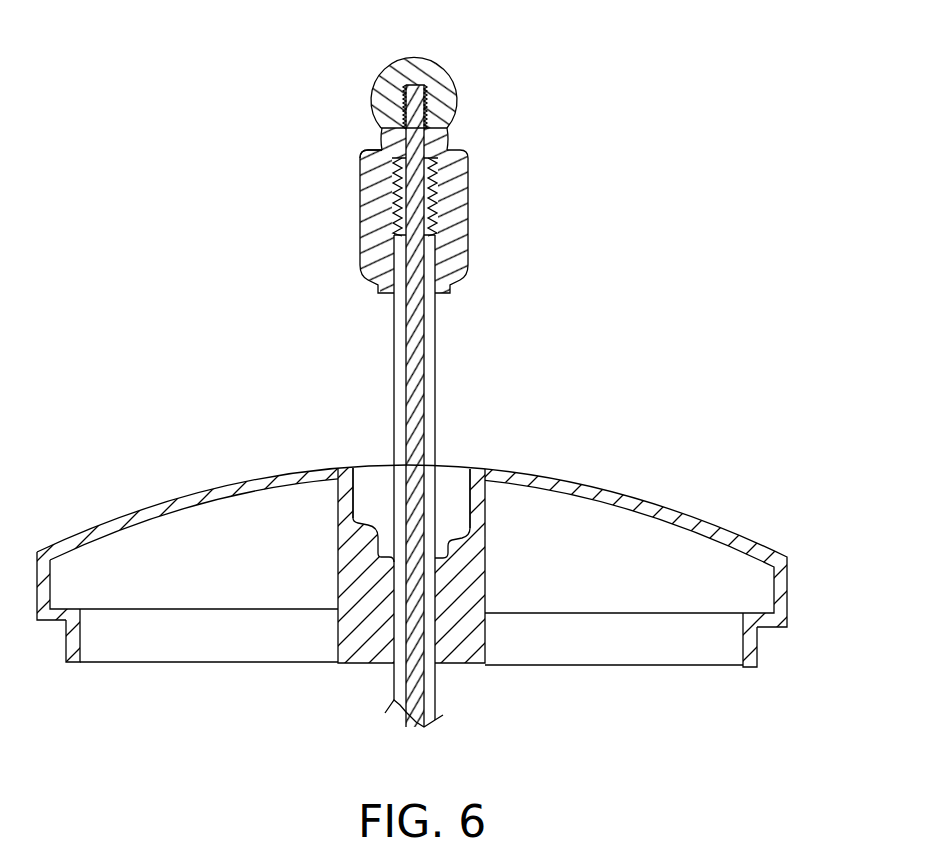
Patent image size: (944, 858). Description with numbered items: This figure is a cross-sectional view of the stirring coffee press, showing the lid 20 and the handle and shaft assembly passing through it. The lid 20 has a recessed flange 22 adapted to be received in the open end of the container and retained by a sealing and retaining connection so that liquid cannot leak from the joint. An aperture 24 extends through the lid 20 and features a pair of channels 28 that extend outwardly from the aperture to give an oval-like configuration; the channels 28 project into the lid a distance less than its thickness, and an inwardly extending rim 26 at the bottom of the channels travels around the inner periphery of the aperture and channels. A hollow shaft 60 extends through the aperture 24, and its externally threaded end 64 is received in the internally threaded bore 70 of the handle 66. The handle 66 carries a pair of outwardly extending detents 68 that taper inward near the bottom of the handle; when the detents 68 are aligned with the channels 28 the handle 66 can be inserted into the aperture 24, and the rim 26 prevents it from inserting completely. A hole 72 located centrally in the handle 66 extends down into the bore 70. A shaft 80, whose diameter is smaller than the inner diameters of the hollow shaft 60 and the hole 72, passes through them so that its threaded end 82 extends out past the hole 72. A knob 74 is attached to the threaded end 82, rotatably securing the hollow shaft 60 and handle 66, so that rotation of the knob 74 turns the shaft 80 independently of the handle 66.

The lid 20 is at (738, 535).
The recessed flange 22 is at (757, 655).
The aperture 24 is at (385, 462).
The inwardly extending rim 26 is at (457, 535).
The channels 28 is at (374, 480).
The hollow shaft 60 is at (432, 690).
The externally threaded end 64 is at (358, 210).
The handle 66 is at (448, 132).
The detents 68 is at (468, 184).
The internally threaded bore 70 is at (392, 295).
The hole 72 is at (363, 150).
The knob 74 is at (440, 63).
The shaft 80 is at (410, 707).
The threaded end 82 is at (405, 107).